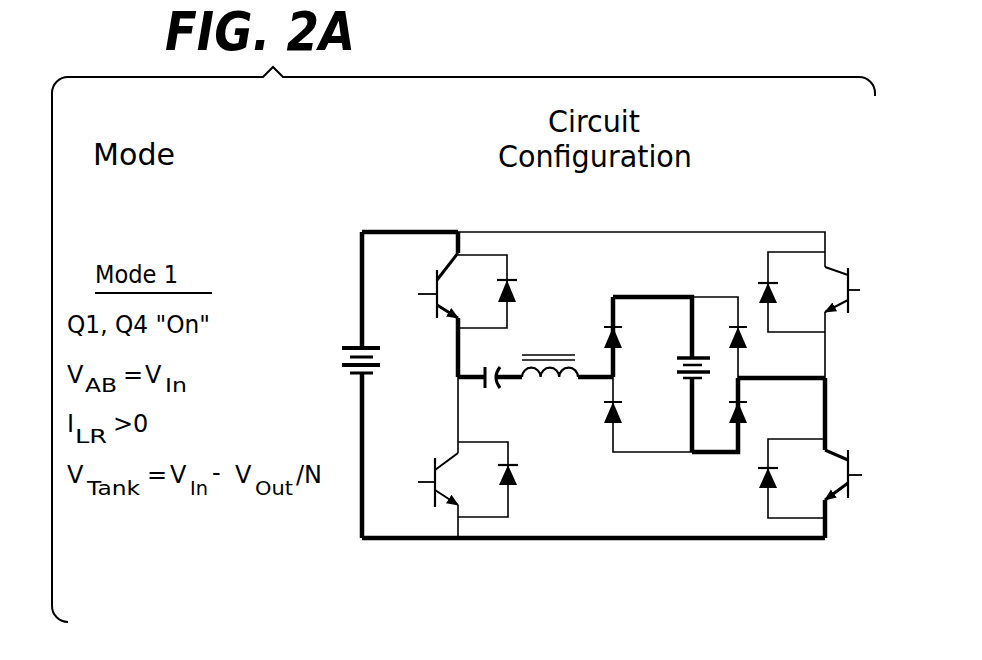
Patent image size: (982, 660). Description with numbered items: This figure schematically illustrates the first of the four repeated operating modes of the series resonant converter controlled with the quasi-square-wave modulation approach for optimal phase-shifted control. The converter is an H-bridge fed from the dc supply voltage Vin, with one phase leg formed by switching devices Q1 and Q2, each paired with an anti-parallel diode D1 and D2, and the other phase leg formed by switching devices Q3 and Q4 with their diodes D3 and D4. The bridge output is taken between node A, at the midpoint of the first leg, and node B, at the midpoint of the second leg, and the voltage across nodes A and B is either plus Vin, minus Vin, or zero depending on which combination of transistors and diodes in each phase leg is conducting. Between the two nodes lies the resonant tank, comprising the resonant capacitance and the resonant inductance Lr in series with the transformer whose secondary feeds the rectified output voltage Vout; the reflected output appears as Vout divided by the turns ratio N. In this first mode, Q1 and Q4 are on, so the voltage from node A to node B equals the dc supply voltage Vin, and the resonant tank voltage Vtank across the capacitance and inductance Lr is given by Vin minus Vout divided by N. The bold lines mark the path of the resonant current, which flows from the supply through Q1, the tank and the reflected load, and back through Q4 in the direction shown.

The switching device Q1 is at (423, 304).
The switching device Q2 is at (422, 457).
The switching device Q3 is at (855, 309).
The switching device Q4 is at (855, 458).
The diode D1 is at (487, 291).
The diode D2 is at (488, 479).
The diode D3 is at (791, 292).
The diode D4 is at (791, 478).
The node A is at (477, 375).
The node B is at (798, 372).
The dc supply voltage Vin is at (343, 405).
The output voltage Vout is at (720, 393).
The resonant inductance Lr is at (592, 328).
The resonant tank voltage Vtank is at (475, 402).